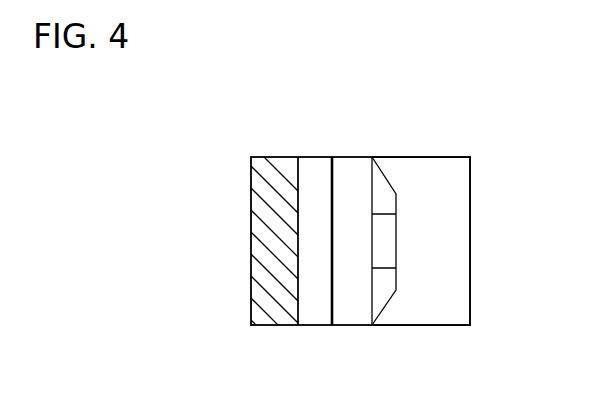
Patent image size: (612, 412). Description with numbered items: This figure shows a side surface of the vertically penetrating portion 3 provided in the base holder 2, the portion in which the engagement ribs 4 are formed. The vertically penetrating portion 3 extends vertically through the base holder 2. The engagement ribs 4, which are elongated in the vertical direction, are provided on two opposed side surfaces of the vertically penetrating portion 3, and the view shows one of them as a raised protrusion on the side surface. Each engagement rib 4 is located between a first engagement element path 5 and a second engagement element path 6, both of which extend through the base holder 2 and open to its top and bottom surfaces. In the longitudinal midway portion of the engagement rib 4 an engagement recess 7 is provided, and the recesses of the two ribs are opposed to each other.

The base holder 2 is at (233, 260).
The vertically penetrating portion 3 is at (314, 312).
The engagement rib 4 is at (394, 166).
The first engagement element path 5 is at (457, 250).
The second engagement element path 6 is at (348, 174).
The engagement recess 7 is at (386, 241).